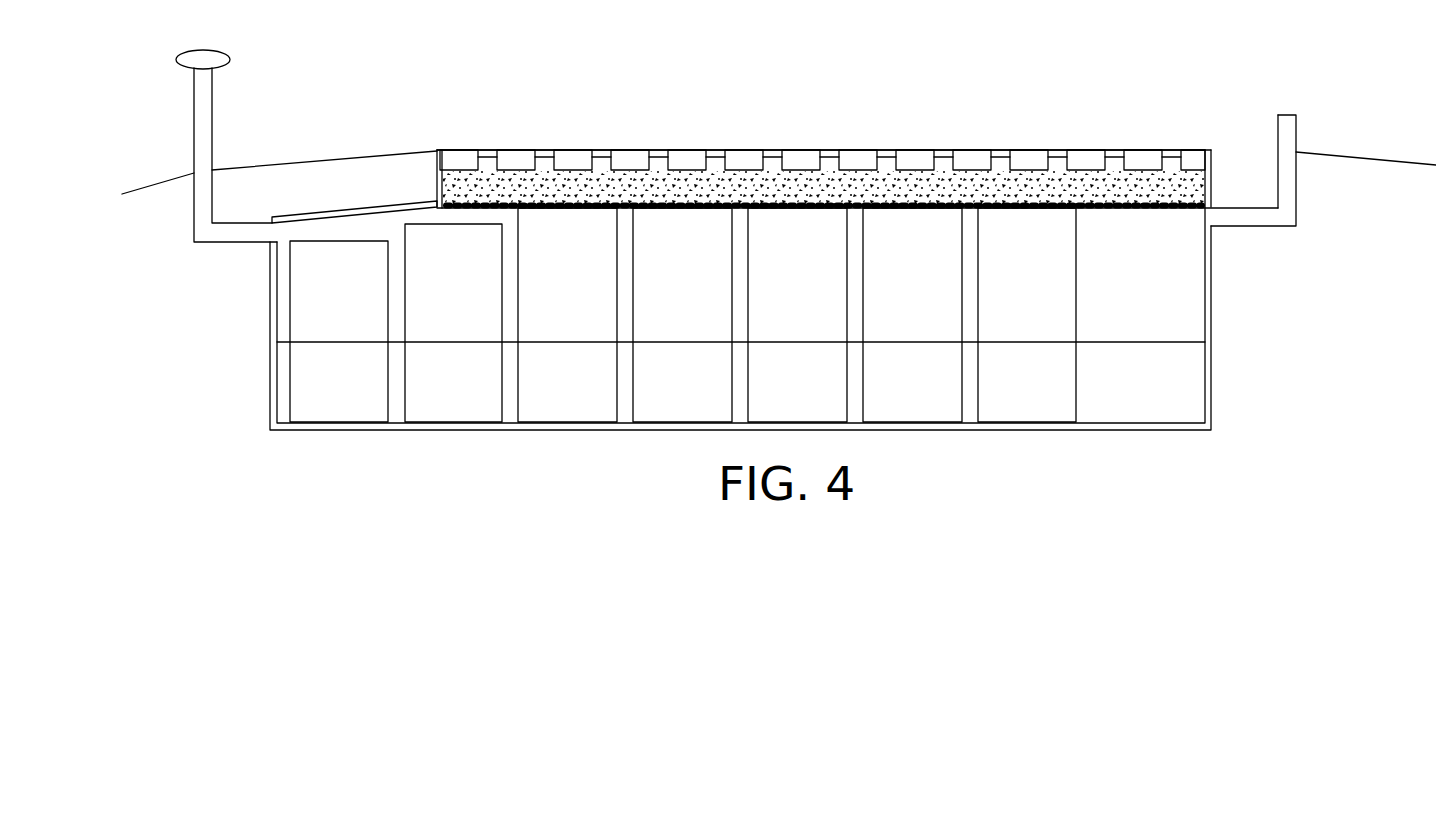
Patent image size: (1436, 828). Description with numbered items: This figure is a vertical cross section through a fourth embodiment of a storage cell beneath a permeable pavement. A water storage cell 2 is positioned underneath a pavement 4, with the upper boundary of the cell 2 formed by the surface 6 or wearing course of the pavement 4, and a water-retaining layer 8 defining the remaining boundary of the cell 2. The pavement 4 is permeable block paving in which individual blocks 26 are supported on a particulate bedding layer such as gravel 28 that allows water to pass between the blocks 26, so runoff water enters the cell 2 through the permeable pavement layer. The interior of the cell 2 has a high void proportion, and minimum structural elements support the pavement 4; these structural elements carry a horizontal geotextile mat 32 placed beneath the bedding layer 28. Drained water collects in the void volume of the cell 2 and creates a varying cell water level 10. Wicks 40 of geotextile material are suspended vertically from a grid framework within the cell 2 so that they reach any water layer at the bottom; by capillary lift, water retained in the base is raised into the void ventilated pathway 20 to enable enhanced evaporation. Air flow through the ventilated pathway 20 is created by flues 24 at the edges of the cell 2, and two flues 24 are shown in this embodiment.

The water storage cell 2 is at (1222, 309).
The pavement 4 is at (743, 158).
The surface 6 is at (571, 146).
The water-retaining layer 8 is at (382, 204).
The cell water level 10 is at (1153, 341).
The ventilated pathway 20 is at (390, 237).
The flue 24 is at (213, 97).
The blocks 26 is at (912, 158).
The bedding layer 28 is at (1112, 185).
The geotextile mat 32 is at (1173, 210).
The wicks 40 is at (325, 311).